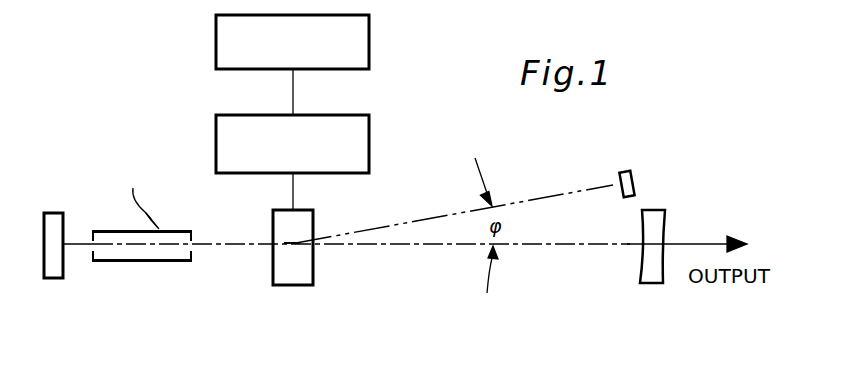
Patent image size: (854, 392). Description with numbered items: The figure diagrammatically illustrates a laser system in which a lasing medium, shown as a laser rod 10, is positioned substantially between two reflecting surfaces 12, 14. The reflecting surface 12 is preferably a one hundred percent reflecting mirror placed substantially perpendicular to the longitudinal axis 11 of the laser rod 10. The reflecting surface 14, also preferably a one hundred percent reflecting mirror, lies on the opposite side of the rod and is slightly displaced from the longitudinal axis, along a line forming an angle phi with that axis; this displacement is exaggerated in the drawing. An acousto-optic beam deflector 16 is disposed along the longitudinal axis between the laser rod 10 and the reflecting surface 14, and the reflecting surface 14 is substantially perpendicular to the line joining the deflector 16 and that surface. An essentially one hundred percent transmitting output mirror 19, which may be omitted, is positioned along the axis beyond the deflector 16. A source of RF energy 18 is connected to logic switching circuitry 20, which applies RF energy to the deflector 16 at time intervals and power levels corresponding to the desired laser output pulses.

The laser rod 10 is at (146, 258).
The longitudinal axis 11 is at (79, 242).
The reflecting surface 12 is at (53, 272).
The reflecting surface 14 is at (630, 170).
The acousto-optic beam deflector 16 is at (296, 276).
The source of RF energy 18 is at (362, 46).
The output mirror 19 is at (653, 273).
The logic switching circuitry 20 is at (362, 141).